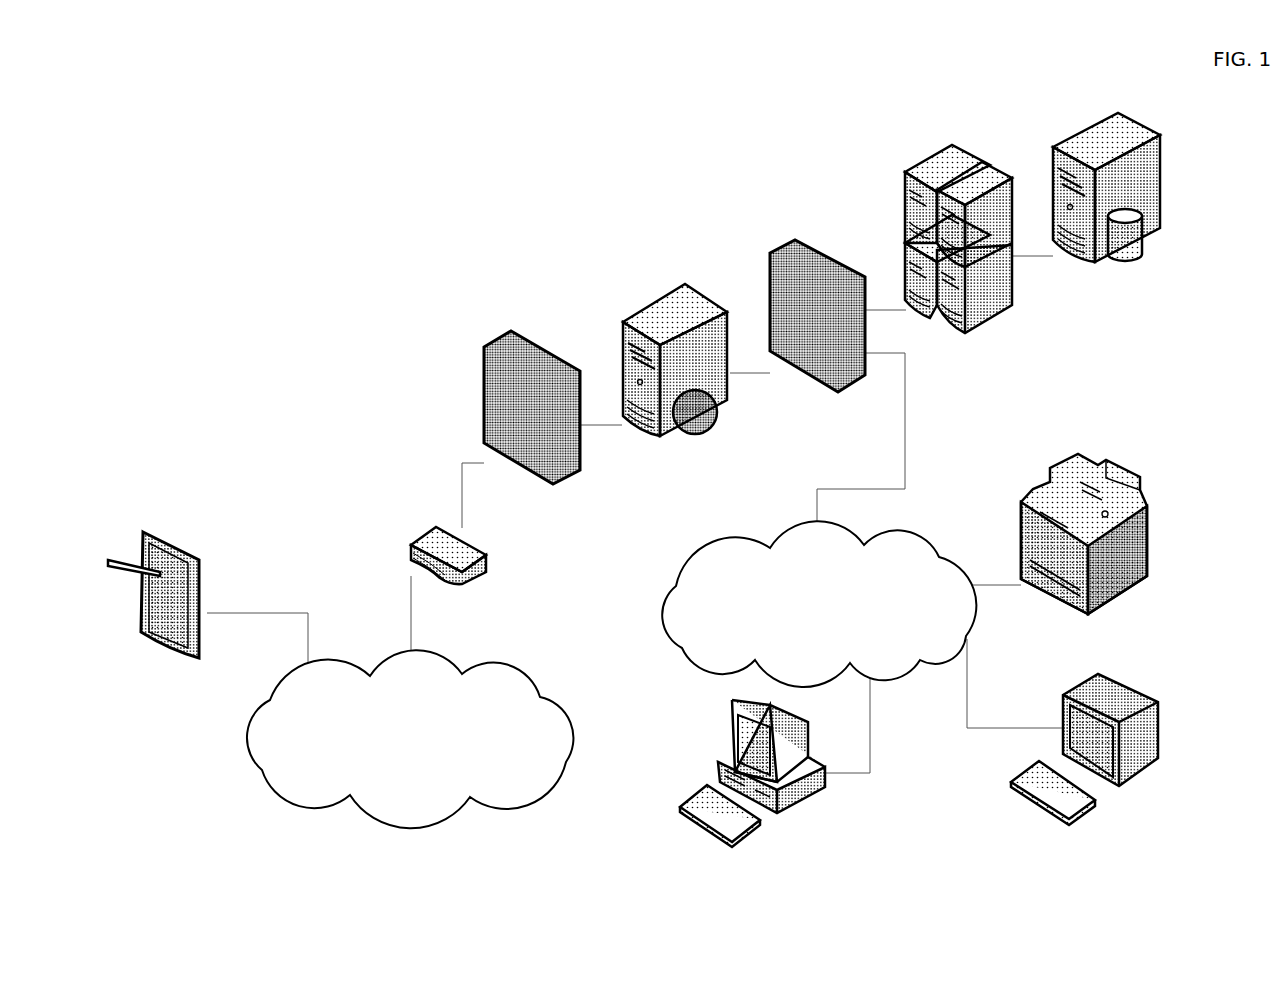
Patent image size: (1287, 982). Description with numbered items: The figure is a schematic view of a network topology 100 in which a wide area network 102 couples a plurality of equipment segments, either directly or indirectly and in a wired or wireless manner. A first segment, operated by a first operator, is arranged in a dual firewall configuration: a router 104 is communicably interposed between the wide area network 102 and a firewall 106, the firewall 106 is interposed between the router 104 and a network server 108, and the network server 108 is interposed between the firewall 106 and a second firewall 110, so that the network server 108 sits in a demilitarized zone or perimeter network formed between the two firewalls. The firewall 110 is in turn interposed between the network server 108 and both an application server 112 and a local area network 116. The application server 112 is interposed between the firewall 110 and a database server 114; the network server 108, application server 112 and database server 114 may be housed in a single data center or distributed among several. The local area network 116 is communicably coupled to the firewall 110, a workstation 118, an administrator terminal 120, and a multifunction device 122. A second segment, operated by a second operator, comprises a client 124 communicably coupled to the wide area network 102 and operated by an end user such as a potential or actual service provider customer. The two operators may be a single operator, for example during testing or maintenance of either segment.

The network topology 100 is at (100, 70).
The wide area network 102 is at (432, 761).
The router 104 is at (448, 574).
The firewall 106 is at (532, 425).
The network server 108 is at (675, 377).
The firewall 110 is at (817, 332).
The application server 112 is at (958, 257).
The database server 114 is at (1106, 205).
The local area network 116 is at (837, 629).
The workstation 118 is at (752, 789).
The administrator terminal 120 is at (1084, 763).
The multifunction device 122 is at (1084, 552).
The client 124 is at (153, 613).